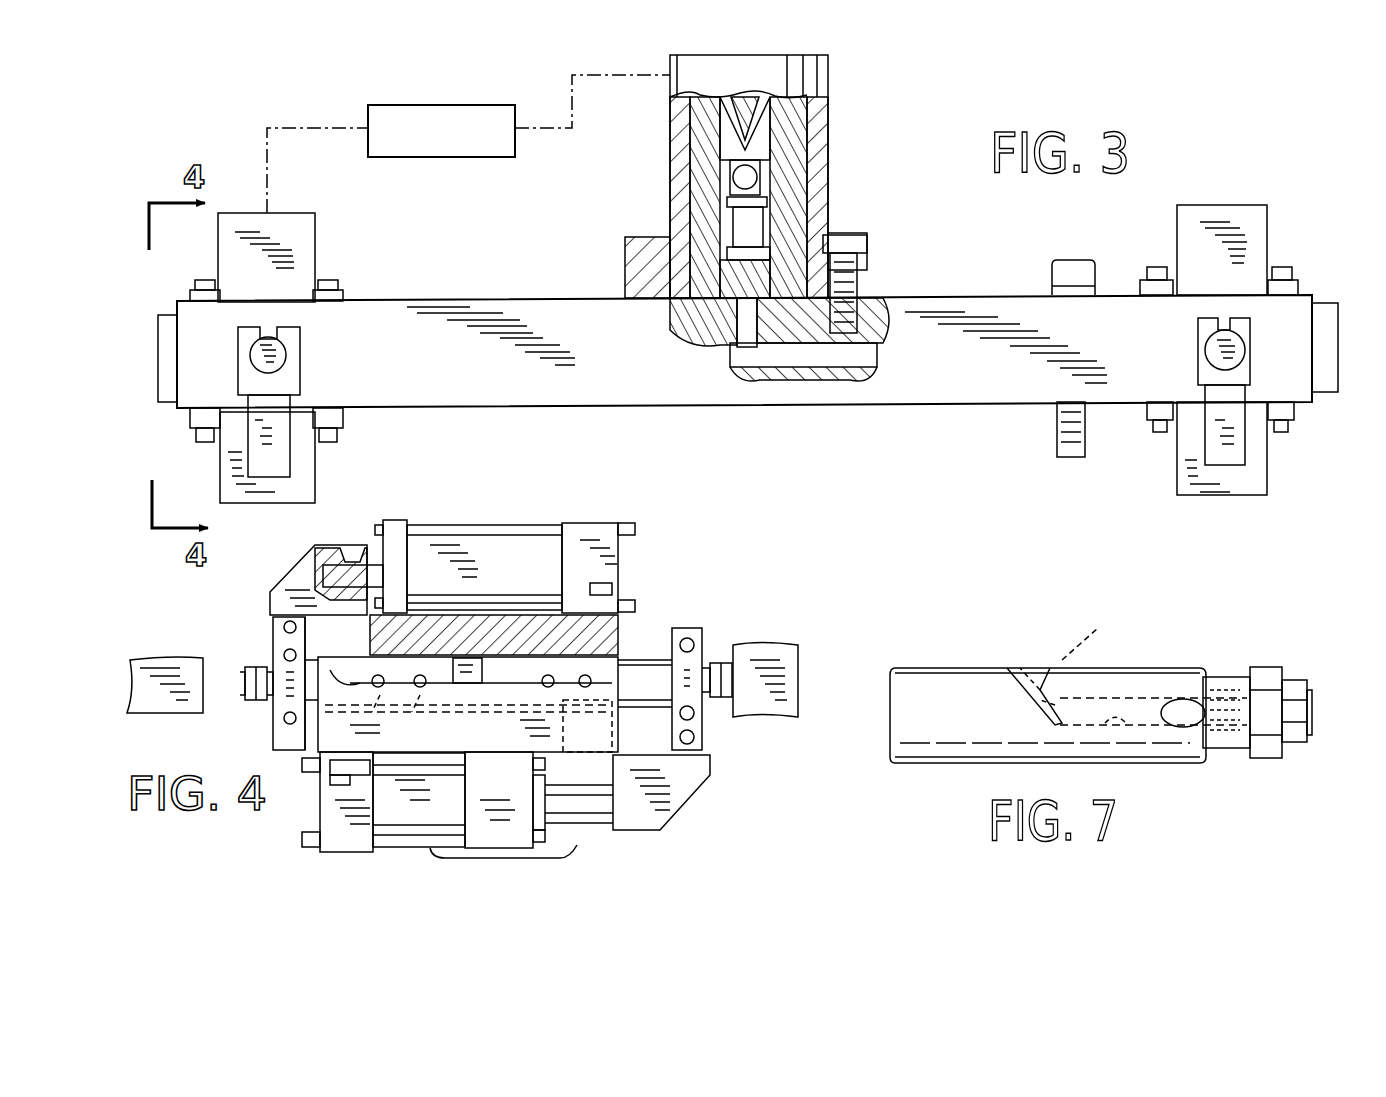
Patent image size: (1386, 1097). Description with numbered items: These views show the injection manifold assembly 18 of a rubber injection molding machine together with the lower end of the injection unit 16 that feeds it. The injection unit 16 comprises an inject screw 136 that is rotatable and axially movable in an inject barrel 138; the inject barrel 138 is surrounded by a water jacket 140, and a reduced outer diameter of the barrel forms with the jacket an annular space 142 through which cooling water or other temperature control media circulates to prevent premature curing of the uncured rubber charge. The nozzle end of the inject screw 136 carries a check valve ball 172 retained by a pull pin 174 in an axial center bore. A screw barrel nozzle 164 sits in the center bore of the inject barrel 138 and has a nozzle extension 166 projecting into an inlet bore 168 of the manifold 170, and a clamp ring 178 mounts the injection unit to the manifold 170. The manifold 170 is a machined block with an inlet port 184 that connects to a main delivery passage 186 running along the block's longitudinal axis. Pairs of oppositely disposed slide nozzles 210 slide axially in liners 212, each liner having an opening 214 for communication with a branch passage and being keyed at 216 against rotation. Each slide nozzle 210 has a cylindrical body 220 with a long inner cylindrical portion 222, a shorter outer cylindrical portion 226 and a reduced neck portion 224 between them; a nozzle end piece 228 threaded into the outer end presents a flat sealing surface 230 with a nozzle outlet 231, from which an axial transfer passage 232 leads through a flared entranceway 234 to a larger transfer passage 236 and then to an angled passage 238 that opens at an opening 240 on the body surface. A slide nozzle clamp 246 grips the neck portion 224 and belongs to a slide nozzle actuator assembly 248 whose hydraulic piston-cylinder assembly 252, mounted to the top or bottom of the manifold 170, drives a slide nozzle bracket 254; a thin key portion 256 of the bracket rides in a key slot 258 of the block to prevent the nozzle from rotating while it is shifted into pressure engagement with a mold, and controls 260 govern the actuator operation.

In FIG. 3, the injection unit 16 is at (850, 100).
In FIG. 3, the injection manifold assembly 18 is at (505, 413).
In FIG. 3, the inject screw 136 is at (767, 147).
In FIG. 3, the inject barrel 138 is at (705, 122).
In FIG. 3, the water jacket 140 is at (672, 137).
In FIG. 3, the annular space 142 is at (830, 112).
In FIG. 3, the screw barrel nozzle 164 is at (672, 310).
In FIG. 3, the nozzle extension 166 is at (780, 380).
In FIG. 3, the inlet bore 168 is at (745, 345).
In FIG. 3, the manifold 170 is at (500, 300).
In FIG. 4, the manifold 170 is at (652, 650).
In FIG. 3, the check valve ball 172 is at (758, 173).
In FIG. 3, the pull pin 174 is at (730, 207).
In FIG. 3, the clamp ring 178 is at (625, 268).
In FIG. 3, the inlet port 184 is at (740, 380).
In FIG. 3, the main delivery passage 186 is at (870, 385).
In FIG. 4, the slide nozzle 210 is at (653, 657).
In FIG. 7, the slide nozzle 210 is at (930, 765).
In FIG. 4, the liner 212 is at (495, 695).
In FIG. 4, the opening 214 is at (365, 715).
In FIG. 4, the key 216 is at (566, 713).
In FIG. 7, the cylindrical body 220 is at (963, 665).
In FIG. 7, the inner cylindrical portion 222 is at (1220, 675).
In FIG. 7, the neck portion 224 is at (1225, 672).
In FIG. 7, the outer cylindrical portion 226 is at (1265, 667).
In FIG. 7, the nozzle end piece 228 is at (1303, 752).
In FIG. 7, the sealing surface 230 is at (1303, 690).
In FIG. 7, the nozzle outlet 231 is at (1360, 718).
In FIG. 7, the axial transfer passage 232 is at (1240, 752).
In FIG. 7, the flared entranceway 234 is at (1200, 735).
In FIG. 7, the transfer passage 236 is at (1118, 745).
In FIG. 7, the angled passage 238 is at (1099, 637).
In FIG. 4, the opening 240 is at (399, 714).
In FIG. 7, the opening 240 is at (1025, 668).
In FIG. 4, the slide nozzle clamp 246 is at (655, 645).
In FIG. 4, the slide nozzle actuator assembly 248 is at (648, 514).
In FIG. 4, the piston-cylinder assembly 252 is at (520, 844).
In FIG. 4, the slide nozzle bracket 254 is at (690, 805).
In FIG. 4, the key portion 256 is at (333, 627).
In FIG. 4, the key slot 258 is at (273, 643).
In FIG. 3, the controls 260 is at (393, 105).